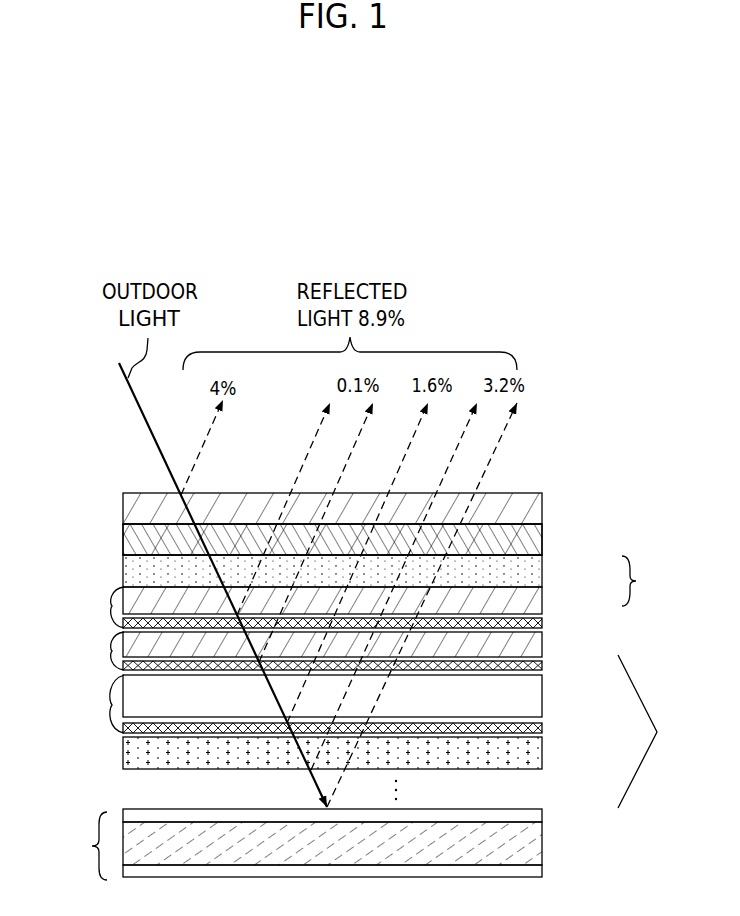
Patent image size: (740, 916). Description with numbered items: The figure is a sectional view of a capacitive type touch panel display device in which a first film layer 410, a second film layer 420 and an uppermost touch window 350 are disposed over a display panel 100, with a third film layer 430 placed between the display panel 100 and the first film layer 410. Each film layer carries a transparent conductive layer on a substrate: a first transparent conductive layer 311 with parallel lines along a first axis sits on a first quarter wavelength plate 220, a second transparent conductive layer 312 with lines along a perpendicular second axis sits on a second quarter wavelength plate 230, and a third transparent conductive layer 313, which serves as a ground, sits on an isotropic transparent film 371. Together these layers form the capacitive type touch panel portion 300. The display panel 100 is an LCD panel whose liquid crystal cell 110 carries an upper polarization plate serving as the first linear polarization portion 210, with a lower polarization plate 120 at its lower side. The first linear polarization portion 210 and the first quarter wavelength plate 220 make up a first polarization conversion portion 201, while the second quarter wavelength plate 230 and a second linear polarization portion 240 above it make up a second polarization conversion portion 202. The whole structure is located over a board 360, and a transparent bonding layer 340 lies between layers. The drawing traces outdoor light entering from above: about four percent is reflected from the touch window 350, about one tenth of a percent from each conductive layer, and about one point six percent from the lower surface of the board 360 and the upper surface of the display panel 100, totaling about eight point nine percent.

The display panel 100 is at (81, 846).
The liquid crystal cell 110 is at (534, 843).
The lower polarization plate 120 is at (534, 870).
The first polarization conversion portion 201 is at (655, 731).
The second polarization conversion portion 202 is at (646, 581).
The first linear polarization portion 210 is at (534, 815).
The first quarter wavelength plate 220 is at (534, 646).
The second quarter wavelength plate 230 is at (534, 598).
The second linear polarization portion 240 is at (534, 572).
The capacitive type touch panel portion 300 is at (603, 700).
The first transparent conductive layer 311 is at (534, 667).
The second transparent conductive layer 312 is at (534, 623).
The third transparent conductive layer 313 is at (534, 729).
The transparent bonding layer 340 is at (534, 540).
The touch window 350 is at (534, 509).
The board 360 is at (534, 753).
The isotropic transparent film 371 is at (112, 705).
The first film layer 410 is at (112, 651).
The second film layer 420 is at (112, 606).
The third film layer 430 is at (143, 700).